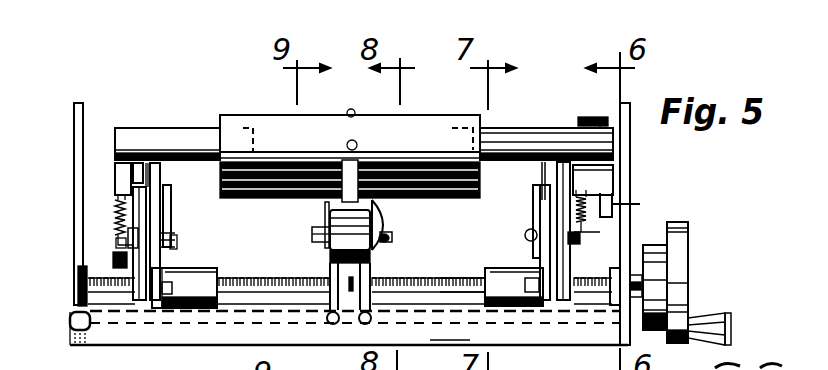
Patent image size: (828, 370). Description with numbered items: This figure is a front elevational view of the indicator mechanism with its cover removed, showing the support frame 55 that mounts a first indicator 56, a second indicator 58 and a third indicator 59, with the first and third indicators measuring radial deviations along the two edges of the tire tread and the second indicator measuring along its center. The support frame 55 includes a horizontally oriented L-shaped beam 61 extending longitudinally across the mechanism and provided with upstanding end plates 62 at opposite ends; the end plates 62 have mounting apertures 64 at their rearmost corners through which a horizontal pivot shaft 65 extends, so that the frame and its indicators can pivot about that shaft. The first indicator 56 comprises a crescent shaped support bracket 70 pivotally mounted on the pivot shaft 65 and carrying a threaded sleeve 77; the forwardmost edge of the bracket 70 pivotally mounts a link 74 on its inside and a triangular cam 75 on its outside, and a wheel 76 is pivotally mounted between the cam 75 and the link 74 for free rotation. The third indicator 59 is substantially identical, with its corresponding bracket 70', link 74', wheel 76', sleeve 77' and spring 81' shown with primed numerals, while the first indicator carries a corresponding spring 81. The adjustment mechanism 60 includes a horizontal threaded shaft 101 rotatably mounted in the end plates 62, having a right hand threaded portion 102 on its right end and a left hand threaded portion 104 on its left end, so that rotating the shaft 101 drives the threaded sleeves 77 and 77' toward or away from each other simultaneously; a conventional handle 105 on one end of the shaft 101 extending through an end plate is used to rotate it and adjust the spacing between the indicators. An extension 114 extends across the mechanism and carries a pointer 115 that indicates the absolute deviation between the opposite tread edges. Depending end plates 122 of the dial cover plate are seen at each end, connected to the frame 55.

The end plate 122 is at (74, 173).
The third indicator 59 is at (165, 127).
The second indicator 58 is at (342, 114).
The first indicator 56 is at (548, 128).
The pointer 115 is at (591, 111).
The triangular cam 75 is at (560, 194).
The crescent shaped support bracket 70' is at (158, 231).
The link 74' is at (167, 240).
The wheel 76' is at (184, 217).
The left spring 81' is at (107, 221).
The threaded sleeve 77' is at (185, 273).
The left hand threaded portion 104 is at (255, 278).
The horizontal threaded shaft 101 is at (423, 266).
The right hand threaded portion 102 is at (437, 278).
The crescent shaped support bracket 70 is at (523, 210).
The link 74 is at (520, 240).
The wheel 76 is at (534, 231).
The threaded sleeve 77 is at (514, 267).
The right spring 81 is at (599, 218).
The extension 114 is at (638, 205).
The end plate 62 is at (78, 271).
The handle 105 is at (688, 284).
The adjustment mechanism 60 is at (688, 231).
The horizontal pivot shaft 65 is at (168, 326).
The mounting aperture 64 is at (72, 299).
The support frame 55 is at (335, 345).
The L-shaped beam 61 is at (445, 343).